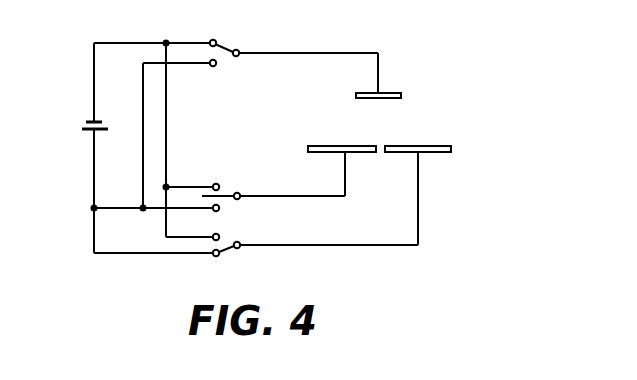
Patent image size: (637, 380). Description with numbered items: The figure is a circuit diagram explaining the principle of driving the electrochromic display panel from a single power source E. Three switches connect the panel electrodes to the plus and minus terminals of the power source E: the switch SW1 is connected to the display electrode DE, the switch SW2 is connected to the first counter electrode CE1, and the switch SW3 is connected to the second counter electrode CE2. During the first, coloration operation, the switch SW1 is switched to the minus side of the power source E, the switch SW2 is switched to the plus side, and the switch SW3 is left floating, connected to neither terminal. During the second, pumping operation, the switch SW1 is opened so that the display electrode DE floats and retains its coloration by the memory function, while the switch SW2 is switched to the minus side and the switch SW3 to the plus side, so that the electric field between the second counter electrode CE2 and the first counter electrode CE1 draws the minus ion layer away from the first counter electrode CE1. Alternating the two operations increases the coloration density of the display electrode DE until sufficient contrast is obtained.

The power source E is at (78, 148).
The switch connected to the display electrode SW1 is at (294, 54).
The switch connected to the first counter electrode SW2 is at (315, 257).
The switch connected to the second counter electrode SW3 is at (273, 187).
The display electrode DE is at (396, 85).
The first counter electrode CE1 is at (427, 183).
The second counter electrode CE2 is at (325, 158).